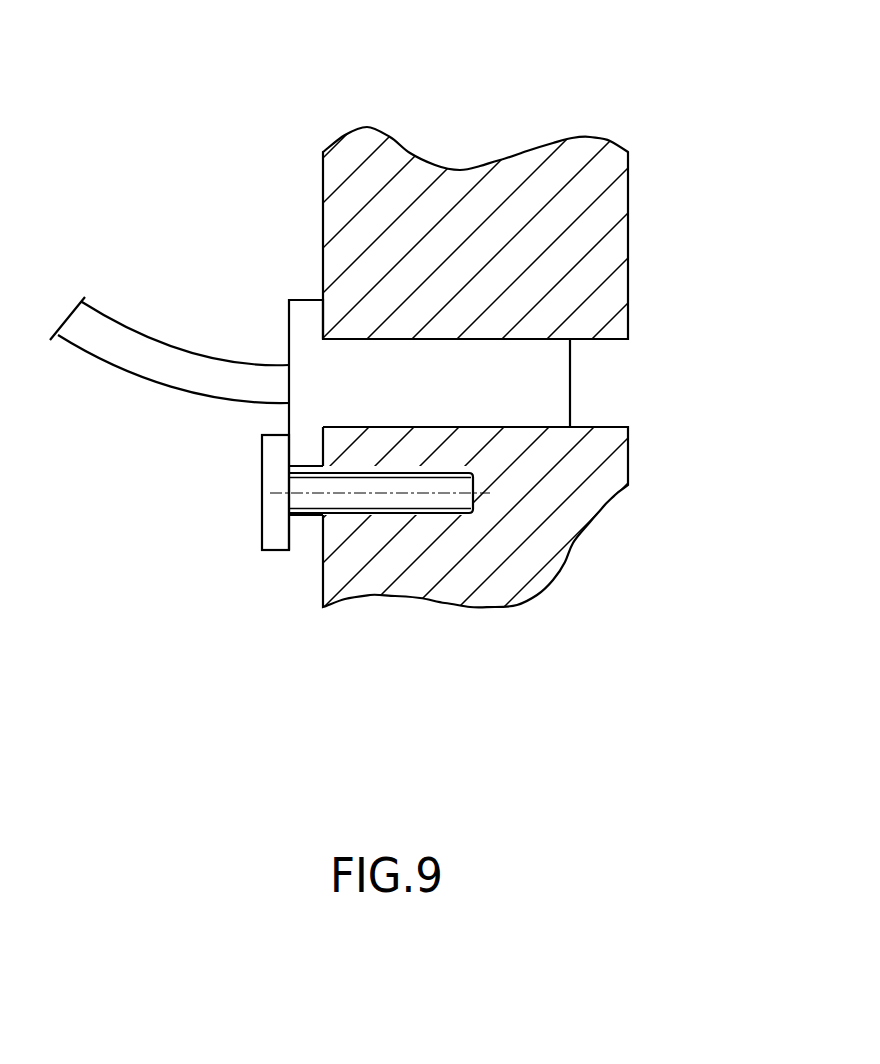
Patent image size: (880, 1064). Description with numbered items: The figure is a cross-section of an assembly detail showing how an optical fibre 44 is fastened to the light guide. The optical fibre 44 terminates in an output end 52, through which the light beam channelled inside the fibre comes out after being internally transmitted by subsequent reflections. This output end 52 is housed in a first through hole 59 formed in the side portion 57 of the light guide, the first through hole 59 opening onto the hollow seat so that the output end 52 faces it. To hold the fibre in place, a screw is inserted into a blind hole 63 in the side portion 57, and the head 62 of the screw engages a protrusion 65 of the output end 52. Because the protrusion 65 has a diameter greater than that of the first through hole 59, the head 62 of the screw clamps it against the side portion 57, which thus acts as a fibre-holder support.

The optical fibre 44 is at (193, 375).
The output end 52 is at (567, 390).
The side portion 57 is at (628, 245).
The first through hole 59 is at (603, 340).
The head of screw 62 is at (270, 525).
The blind hole 63 is at (460, 517).
The protrusion 65 is at (303, 327).